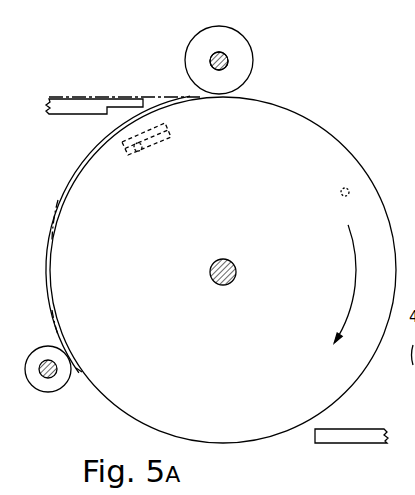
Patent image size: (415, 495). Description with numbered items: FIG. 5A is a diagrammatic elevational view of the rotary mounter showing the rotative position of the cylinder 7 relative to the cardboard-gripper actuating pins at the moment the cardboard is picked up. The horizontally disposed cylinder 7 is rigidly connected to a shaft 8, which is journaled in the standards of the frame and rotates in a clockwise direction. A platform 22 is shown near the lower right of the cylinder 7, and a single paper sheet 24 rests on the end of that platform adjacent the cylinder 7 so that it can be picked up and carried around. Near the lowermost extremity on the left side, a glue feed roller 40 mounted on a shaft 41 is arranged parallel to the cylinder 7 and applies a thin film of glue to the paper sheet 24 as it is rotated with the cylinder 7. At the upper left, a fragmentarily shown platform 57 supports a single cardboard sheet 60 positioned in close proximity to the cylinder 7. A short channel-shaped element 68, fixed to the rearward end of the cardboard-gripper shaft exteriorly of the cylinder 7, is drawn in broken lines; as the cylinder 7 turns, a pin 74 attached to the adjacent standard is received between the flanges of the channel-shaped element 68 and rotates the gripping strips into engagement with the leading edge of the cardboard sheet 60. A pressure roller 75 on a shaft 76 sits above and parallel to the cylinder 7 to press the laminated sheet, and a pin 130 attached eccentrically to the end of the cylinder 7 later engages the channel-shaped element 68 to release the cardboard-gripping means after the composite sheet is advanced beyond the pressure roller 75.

The cylinder 7 is at (340, 146).
The shaft 8 is at (227, 259).
The platform 22 is at (349, 428).
The paper sheet 24 is at (70, 193).
The glue feed roller 40 is at (45, 346).
The shaft 41 is at (50, 378).
The platform 57 is at (86, 114).
The cardboard sheet 60 is at (138, 97).
The channel-shaped element 68 is at (160, 142).
The pin 74 is at (137, 152).
The pressure roller 75 is at (253, 52).
The shaft 76 is at (228, 65).
The pin 130 is at (349, 188).